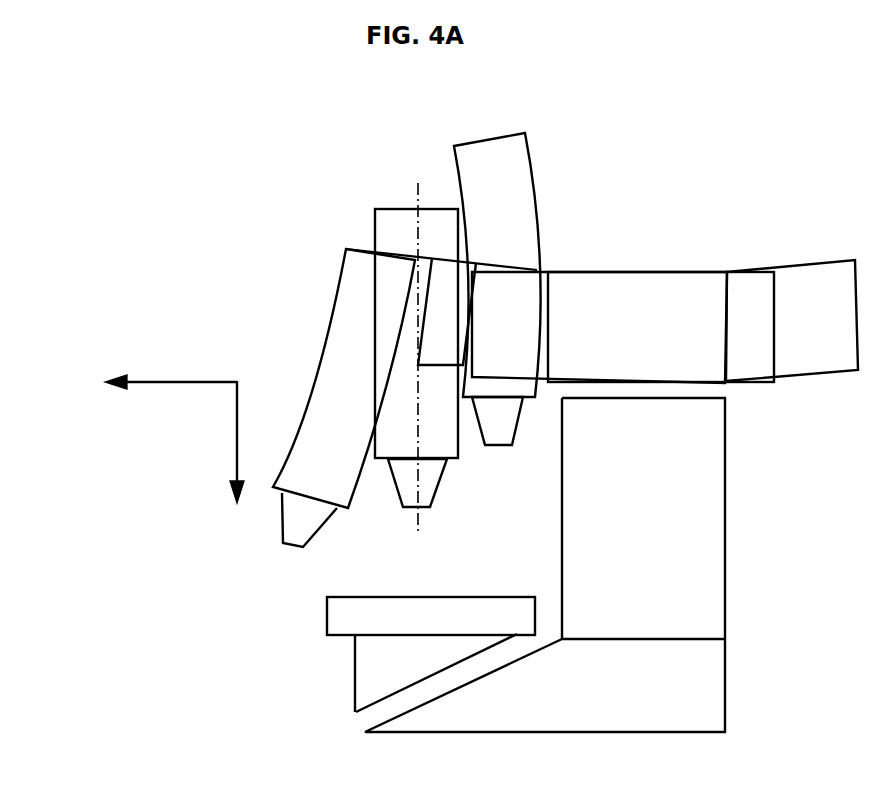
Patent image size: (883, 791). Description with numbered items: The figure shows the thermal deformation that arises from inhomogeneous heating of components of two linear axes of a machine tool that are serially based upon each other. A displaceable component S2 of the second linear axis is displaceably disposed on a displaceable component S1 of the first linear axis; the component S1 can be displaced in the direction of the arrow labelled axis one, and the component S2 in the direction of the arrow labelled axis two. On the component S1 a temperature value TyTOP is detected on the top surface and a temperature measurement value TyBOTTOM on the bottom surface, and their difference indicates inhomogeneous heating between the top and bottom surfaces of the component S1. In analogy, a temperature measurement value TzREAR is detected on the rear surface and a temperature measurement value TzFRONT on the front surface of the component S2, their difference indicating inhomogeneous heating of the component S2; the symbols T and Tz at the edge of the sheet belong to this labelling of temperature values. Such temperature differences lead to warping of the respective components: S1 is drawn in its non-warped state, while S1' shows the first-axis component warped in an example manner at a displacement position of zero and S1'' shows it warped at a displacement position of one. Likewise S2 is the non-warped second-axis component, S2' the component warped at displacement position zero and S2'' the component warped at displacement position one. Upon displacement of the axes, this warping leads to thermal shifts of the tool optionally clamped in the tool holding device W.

The component of the first linear axis S1 is at (661, 283).
The warped component of the first linear axis at axis position zero S1' is at (792, 283).
The warped component of the first linear axis at axis position one S1'' is at (599, 285).
The component of the second linear axis S2 is at (387, 313).
The warped component of the second linear axis at axis position zero S2' is at (540, 259).
The warped component of the second linear axis at axis position one S2'' is at (574, 411).
The tool holding device W is at (427, 493).
The tolerance T is at (877, 235).
The tolerance in z direction Tz is at (870, 287).
The rear surface temperature measurement value TzREAR is at (462, 363).
The front surface temperature measurement value TzFRONT is at (377, 383).
The top surface temperature value TyTOP is at (537, 270).
The bottom surface temperature measurement value TyBOTTOM is at (552, 377).